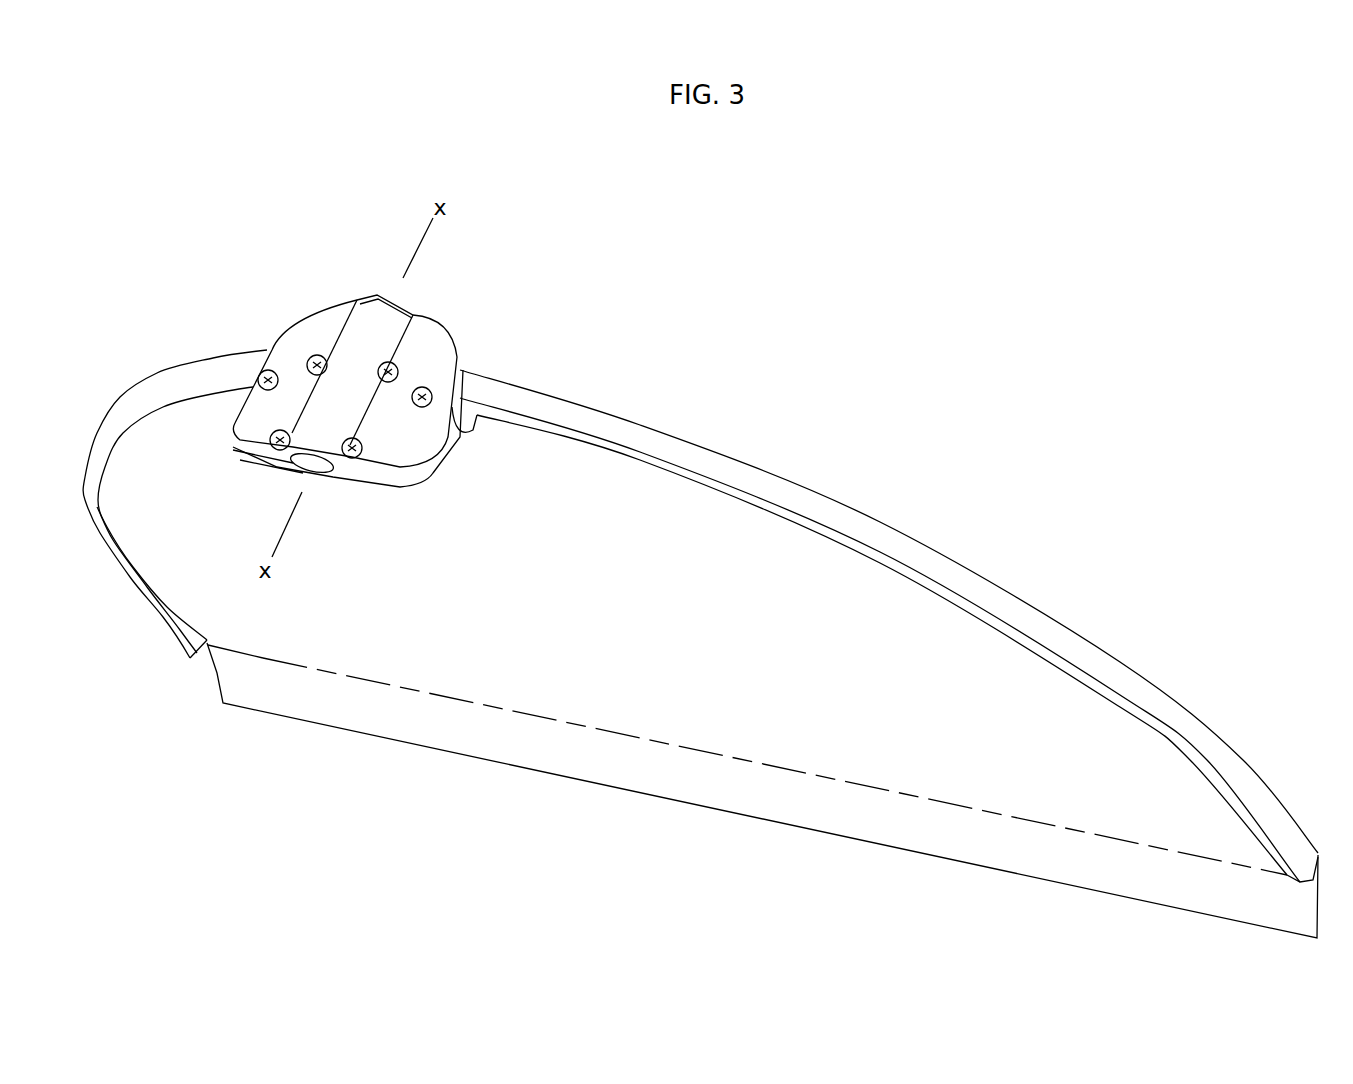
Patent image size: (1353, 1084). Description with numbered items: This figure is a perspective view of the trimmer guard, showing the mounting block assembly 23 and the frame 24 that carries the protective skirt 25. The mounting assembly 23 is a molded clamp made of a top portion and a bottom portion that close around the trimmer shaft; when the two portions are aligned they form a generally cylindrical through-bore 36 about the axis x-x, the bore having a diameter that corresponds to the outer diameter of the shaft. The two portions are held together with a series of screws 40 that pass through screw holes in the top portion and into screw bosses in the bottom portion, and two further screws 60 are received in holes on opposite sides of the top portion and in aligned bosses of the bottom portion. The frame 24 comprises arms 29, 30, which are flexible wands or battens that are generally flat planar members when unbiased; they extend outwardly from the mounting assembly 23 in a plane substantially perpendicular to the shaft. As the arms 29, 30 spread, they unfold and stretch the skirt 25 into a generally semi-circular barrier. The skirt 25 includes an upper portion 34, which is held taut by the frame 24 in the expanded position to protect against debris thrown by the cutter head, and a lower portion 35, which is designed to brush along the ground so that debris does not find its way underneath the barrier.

The mounting block assembly 23 is at (446, 321).
The frame 24 is at (935, 460).
The skirt 25 is at (521, 656).
The arm 29 is at (142, 398).
The arm 30 is at (661, 445).
The upper portion 34 is at (446, 652).
The lower portion 35 is at (762, 790).
The through-bore 36 is at (317, 466).
The screws 40 is at (275, 366).
The screws 60 is at (309, 361).